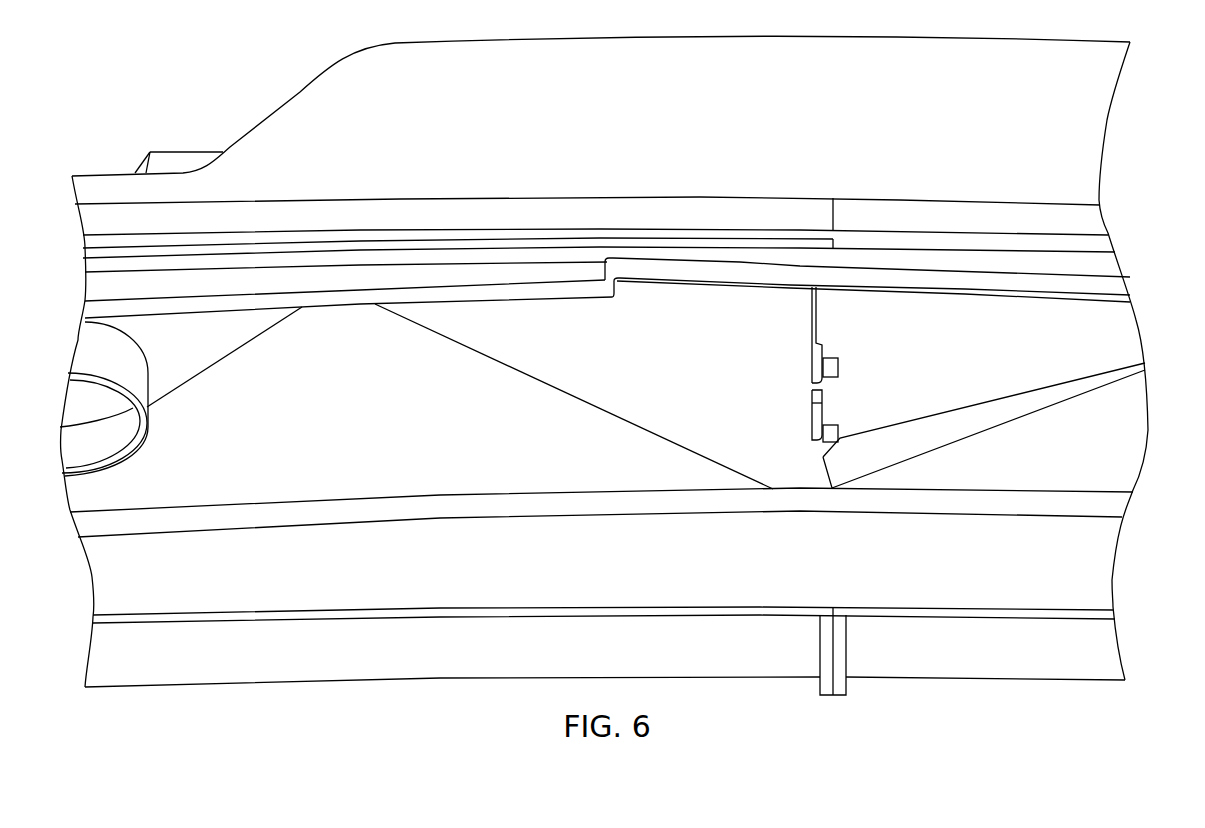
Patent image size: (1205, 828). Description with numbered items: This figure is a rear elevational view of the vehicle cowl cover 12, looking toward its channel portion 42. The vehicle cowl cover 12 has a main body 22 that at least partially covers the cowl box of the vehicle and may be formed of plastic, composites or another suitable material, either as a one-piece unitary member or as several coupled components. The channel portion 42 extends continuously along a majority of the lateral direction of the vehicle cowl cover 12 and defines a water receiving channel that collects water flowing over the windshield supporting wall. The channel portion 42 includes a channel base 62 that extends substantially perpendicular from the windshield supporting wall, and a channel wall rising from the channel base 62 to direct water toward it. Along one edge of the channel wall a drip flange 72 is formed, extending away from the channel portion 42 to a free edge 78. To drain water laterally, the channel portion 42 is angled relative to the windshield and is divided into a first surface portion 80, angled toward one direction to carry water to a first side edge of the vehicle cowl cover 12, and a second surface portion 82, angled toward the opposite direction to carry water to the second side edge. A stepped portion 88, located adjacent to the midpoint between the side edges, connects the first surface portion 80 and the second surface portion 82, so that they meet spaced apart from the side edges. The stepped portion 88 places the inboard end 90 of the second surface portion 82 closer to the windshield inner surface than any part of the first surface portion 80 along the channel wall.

The vehicle cowl cover 12 is at (630, 365).
The main body 22 is at (1093, 82).
The channel portion 42 is at (615, 327).
The channel base 62 is at (1100, 262).
The drip flange 72 is at (607, 269).
The free edge 78 is at (338, 308).
The first surface portion 80 is at (392, 287).
The second surface portion 82 is at (922, 268).
The stepped portion 88 is at (619, 295).
The inboard end 90 is at (622, 252).